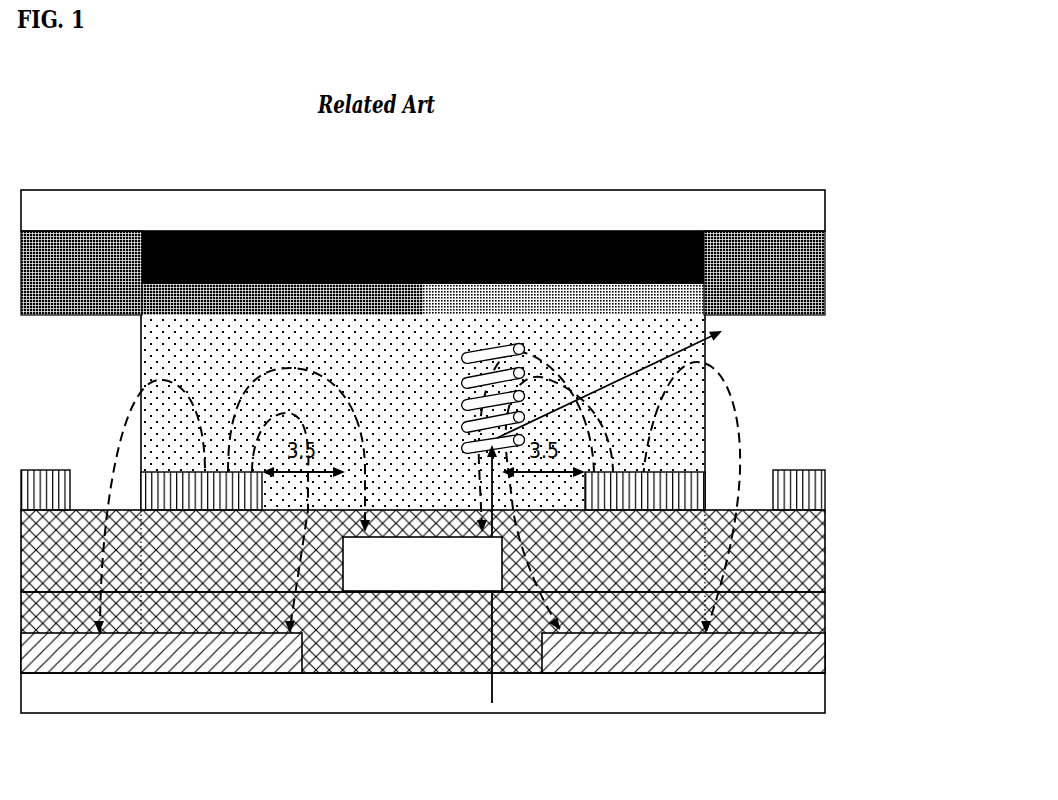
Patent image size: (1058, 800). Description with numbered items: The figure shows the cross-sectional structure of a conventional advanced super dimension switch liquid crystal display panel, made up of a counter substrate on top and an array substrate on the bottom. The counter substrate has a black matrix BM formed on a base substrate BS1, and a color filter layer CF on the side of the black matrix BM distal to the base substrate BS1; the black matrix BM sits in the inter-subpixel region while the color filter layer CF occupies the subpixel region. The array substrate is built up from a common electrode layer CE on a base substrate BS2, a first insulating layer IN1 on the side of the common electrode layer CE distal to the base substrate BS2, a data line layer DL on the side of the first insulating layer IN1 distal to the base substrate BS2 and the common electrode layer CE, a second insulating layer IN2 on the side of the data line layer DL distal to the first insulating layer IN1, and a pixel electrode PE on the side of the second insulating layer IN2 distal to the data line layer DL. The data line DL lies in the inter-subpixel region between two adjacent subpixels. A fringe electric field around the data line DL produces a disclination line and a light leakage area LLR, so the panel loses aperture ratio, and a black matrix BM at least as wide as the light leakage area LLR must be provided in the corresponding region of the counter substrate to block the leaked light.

The base substrate BS1 is at (423, 211).
The black matrix BM is at (423, 253).
The color filter layer CF is at (423, 275).
The light leakage area LLR is at (665, 368).
The pixel electrode PE is at (423, 491).
The data line layer DL is at (422, 564).
The second insulating layer IN2 is at (423, 551).
The first insulating layer IN1 is at (423, 632).
The common electrode layer CE is at (423, 654).
The base substrate BS2 is at (423, 695).